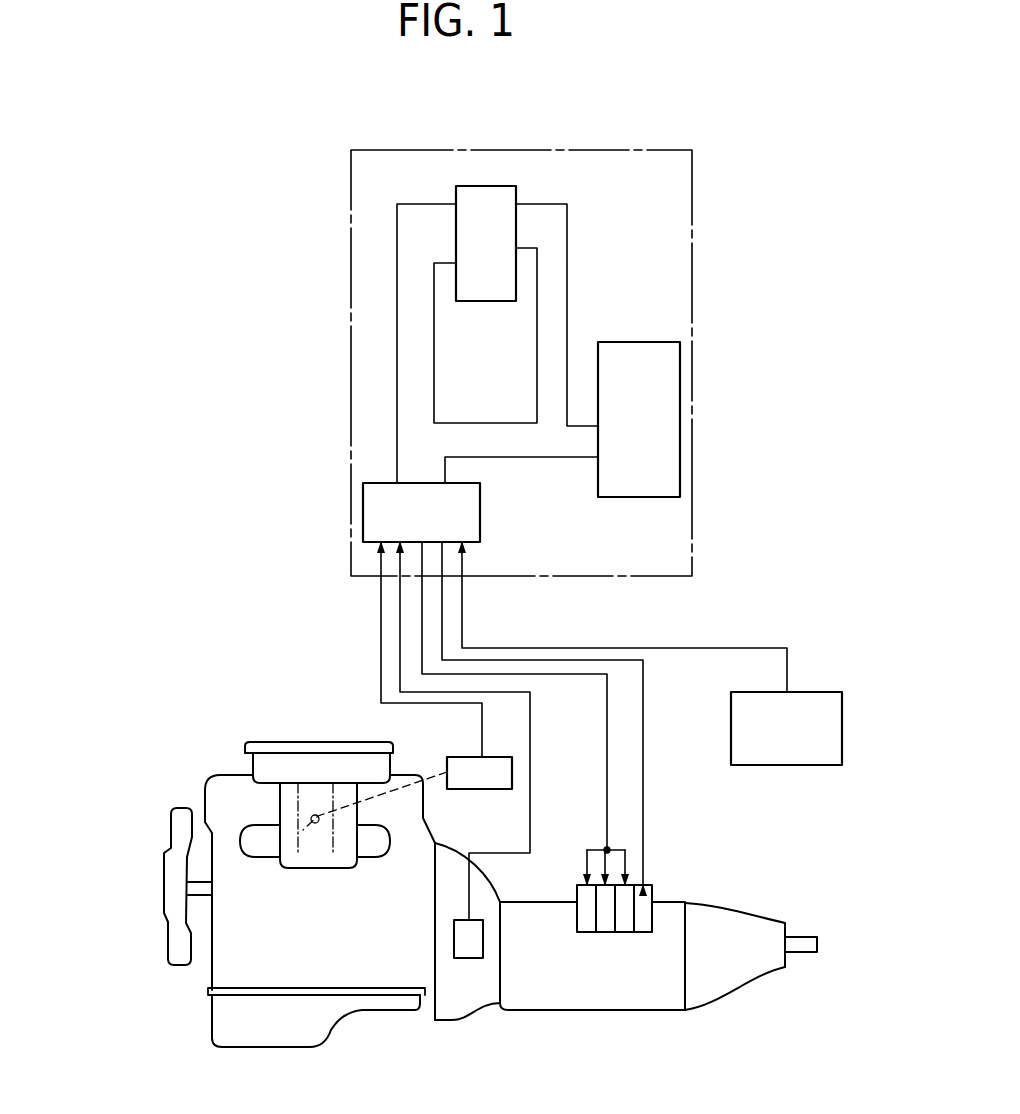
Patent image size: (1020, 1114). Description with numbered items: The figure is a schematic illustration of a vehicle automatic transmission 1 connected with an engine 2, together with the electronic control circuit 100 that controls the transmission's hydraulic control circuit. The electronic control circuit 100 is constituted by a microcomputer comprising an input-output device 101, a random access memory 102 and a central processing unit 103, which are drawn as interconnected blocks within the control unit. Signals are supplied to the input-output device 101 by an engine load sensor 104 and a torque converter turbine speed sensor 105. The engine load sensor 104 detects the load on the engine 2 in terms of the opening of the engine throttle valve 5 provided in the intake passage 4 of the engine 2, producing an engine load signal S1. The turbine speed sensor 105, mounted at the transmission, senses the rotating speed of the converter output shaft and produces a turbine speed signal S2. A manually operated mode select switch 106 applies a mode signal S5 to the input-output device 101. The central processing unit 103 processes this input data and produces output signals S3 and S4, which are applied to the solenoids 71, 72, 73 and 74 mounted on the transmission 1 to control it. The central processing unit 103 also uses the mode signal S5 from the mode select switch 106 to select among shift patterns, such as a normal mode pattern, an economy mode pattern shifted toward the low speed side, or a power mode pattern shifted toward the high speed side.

The automatic transmission 1 is at (632, 1003).
The engine 2 is at (372, 982).
The intake passage 4 is at (300, 843).
The engine throttle valve 5 is at (311, 818).
The solenoid 71 is at (583, 933).
The solenoid 72 is at (603, 933).
The solenoid 73 is at (623, 933).
The solenoid 74 is at (642, 933).
The electronic control circuit 100 is at (613, 141).
The input-output device 101 is at (480, 510).
The random access memory 102 is at (516, 199).
The central processing unit 103 is at (633, 348).
The engine load sensor 104 is at (467, 762).
The torque converter turbine speed sensor 105 is at (468, 959).
The mode select switch 106 is at (787, 766).
The engine load signal S1 is at (381, 636).
The turbine speed signal S2 is at (531, 790).
The output signal S3 is at (607, 718).
The output signal S4 is at (643, 730).
The mode signal S5 is at (787, 683).